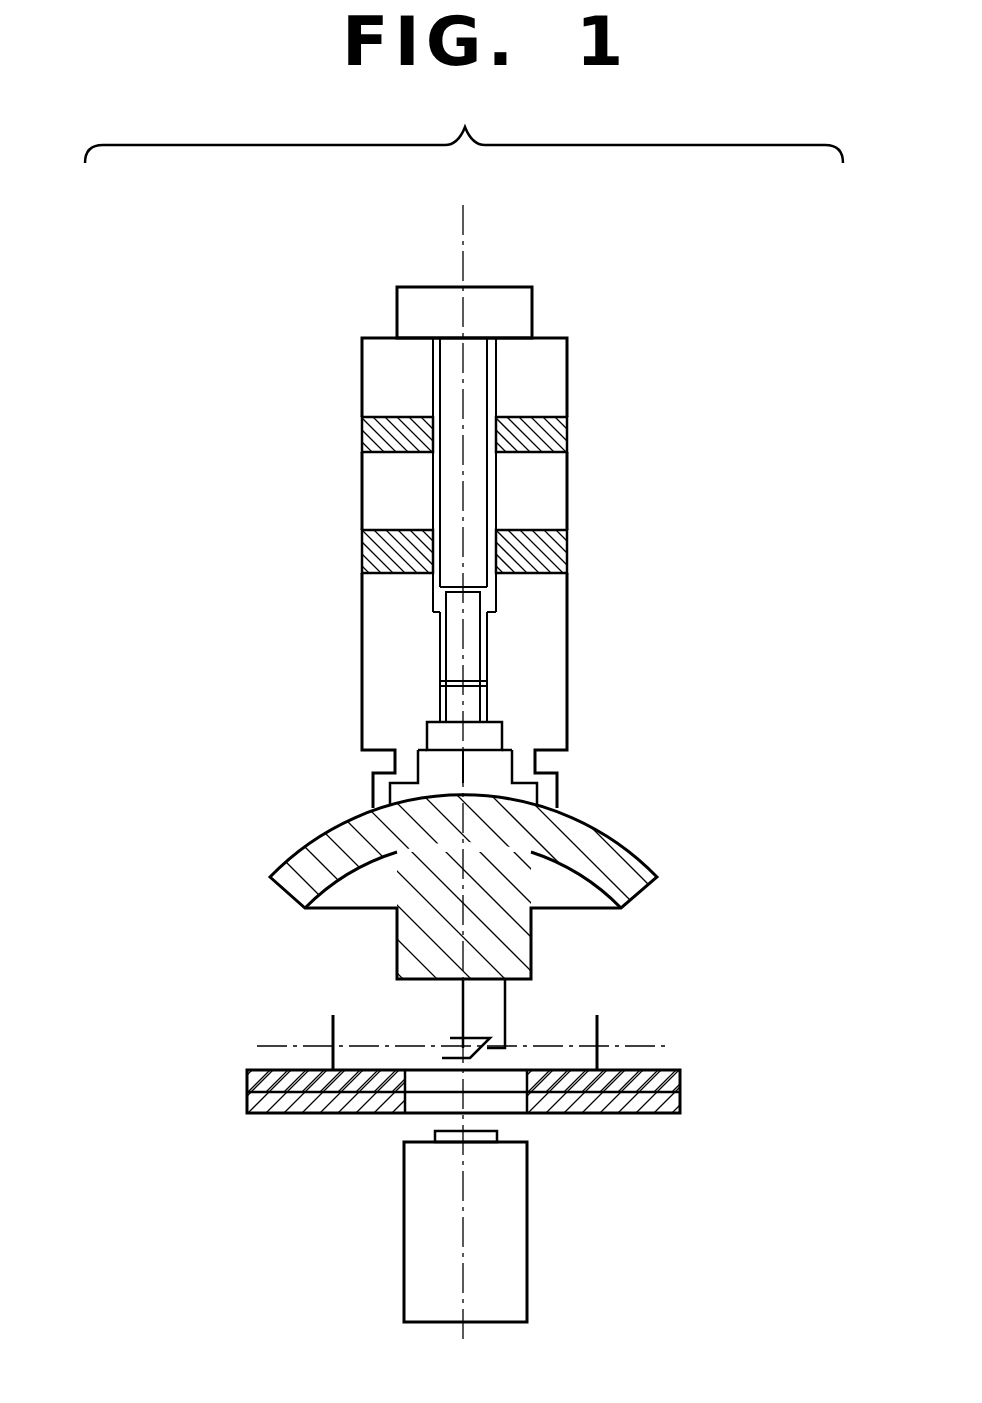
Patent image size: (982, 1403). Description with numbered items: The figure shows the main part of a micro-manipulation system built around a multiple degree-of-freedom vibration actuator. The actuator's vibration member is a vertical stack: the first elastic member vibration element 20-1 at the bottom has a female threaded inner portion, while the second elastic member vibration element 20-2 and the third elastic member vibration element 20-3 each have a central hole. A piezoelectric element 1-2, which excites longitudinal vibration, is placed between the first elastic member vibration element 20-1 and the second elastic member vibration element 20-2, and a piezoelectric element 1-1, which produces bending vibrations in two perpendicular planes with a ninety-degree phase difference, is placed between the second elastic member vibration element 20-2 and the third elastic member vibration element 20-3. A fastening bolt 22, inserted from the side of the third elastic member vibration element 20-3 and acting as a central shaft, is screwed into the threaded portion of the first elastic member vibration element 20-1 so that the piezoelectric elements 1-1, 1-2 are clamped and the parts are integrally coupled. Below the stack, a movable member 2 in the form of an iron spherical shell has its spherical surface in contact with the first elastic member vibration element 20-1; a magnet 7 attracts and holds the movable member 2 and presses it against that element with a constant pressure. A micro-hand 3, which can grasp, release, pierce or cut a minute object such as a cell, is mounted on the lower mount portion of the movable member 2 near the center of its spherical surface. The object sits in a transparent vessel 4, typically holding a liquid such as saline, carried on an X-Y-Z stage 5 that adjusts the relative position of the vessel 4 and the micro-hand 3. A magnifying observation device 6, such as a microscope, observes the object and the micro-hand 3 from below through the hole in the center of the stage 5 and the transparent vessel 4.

The fastening bolt 22 is at (532, 310).
The third elastic member vibration element 20-3 is at (567, 378).
The second elastic member vibration element 20-2 is at (362, 490).
The first elastic member vibration element 20-1 is at (556, 660).
The piezoelectric element 1-1 is at (567, 432).
The piezoelectric element 1-2 is at (567, 548).
The magnet 7 is at (440, 737).
The movable member 2 is at (627, 847).
The micro-hand 3 is at (480, 1037).
The vessel 4 is at (332, 1028).
The X-Y-Z stage 5 is at (247, 1094).
The magnifying observation device 6 is at (404, 1232).